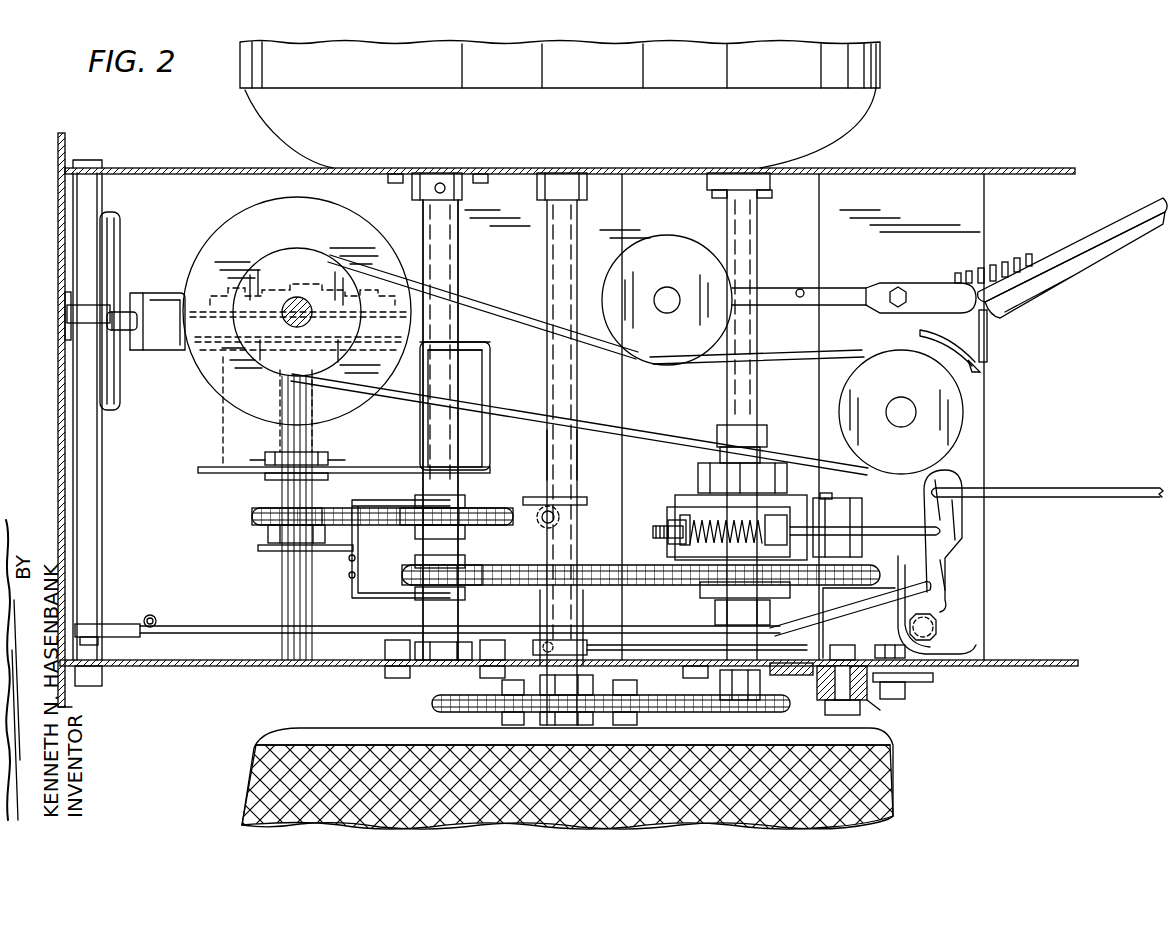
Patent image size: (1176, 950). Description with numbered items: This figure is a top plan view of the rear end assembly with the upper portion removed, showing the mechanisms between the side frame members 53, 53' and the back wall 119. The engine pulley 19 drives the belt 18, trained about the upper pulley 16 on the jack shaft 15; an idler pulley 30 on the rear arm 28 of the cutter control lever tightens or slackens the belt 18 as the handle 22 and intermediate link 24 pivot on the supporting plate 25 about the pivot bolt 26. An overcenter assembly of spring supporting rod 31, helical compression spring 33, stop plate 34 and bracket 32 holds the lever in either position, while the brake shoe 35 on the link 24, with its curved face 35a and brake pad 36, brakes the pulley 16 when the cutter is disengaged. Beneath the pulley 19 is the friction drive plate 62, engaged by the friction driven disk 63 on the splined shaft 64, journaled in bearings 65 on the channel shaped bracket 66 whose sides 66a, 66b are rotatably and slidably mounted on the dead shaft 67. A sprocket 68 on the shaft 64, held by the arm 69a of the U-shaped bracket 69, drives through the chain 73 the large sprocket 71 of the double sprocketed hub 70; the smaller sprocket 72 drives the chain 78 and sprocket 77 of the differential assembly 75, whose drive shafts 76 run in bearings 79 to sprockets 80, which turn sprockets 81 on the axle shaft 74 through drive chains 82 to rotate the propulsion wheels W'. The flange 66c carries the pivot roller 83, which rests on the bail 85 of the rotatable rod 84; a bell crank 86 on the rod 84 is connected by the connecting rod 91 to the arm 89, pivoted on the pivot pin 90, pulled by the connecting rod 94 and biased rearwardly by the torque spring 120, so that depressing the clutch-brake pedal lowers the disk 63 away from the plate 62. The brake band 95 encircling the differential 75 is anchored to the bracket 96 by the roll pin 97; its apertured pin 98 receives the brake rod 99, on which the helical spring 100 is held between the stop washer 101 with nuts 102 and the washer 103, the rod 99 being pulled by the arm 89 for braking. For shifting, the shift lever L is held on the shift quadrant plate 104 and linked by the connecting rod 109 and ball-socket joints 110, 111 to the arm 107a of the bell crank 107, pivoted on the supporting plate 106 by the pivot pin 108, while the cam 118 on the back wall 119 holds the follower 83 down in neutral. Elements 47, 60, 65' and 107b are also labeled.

The jack shaft 15 is at (893, 426).
The upper pulley 16 is at (908, 391).
The belt 18 is at (640, 432).
The engine pulley 19 is at (300, 275).
The handle portion 22 is at (1110, 240).
The intermediate link 24 is at (925, 283).
The supporting plate 25 is at (895, 207).
The pivot bolt 26 is at (908, 298).
The rear arm 28 is at (770, 310).
The idler pulley 30 is at (672, 277).
The spring supporting rod 31 is at (994, 265).
The bracket 32 is at (1080, 268).
The helical compression spring 33 is at (1027, 262).
The stop plate 34 is at (958, 273).
The brake shoe 35 is at (987, 326).
The concavely curved face 35a is at (978, 351).
The brake pad 36 is at (982, 373).
The pin 47 is at (797, 291).
The side frame member 53 is at (569, 680).
The side frame member 53' is at (570, 156).
The nut 60 is at (845, 714).
The friction drive plate 62 is at (290, 232).
The friction driven disk 63 is at (182, 335).
The splined shaft 64 is at (288, 320).
The bearings 65 is at (286, 444).
The clutch member 65' is at (300, 375).
The channel shaped bracket 66 is at (496, 382).
The bracket side 66a is at (385, 458).
The bracket side 66b is at (468, 350).
The flange 66c is at (150, 308).
The dead supporting shaft 67 is at (440, 253).
The sprocket 68 is at (262, 510).
The U-shaped bracket 69 is at (358, 598).
The rearwardly extending arm 69a is at (260, 550).
The double sprocketed hub 70 is at (460, 554).
The large sprocket 71 is at (410, 525).
The smaller sprocket 72 is at (405, 571).
The chain 73 is at (355, 510).
The axle shaft 74 is at (548, 454).
The differential assembly 75 is at (664, 502).
The drive shafts 76 is at (726, 388).
The sprocket 77 is at (680, 590).
The chain 78 is at (621, 566).
The bearings 79 is at (754, 184).
The sprockets 80 is at (760, 708).
The sprockets 81 is at (470, 712).
The drive chain 82 is at (645, 706).
The pivot roller 83 is at (137, 320).
The rotatable rod 84 is at (90, 468).
The bail 85 is at (120, 236).
The bell crank 86 is at (92, 632).
The arm 89 is at (936, 570).
The pivot pin 90 is at (938, 628).
The connecting rod 91 is at (238, 630).
The connecting rod 94 is at (1112, 486).
The brake band 95 is at (668, 531).
The bracket 96 is at (862, 506).
The roll pin 97 is at (826, 500).
The apertured pin 98 is at (764, 531).
The brake rod 99 is at (864, 530).
The helical spring 100 is at (730, 532).
The stop washer 101 is at (684, 526).
The nuts 102 is at (672, 541).
The washer 103 is at (765, 541).
The shift quadrant plate 104 is at (930, 680).
The supporting plate 106 is at (532, 283).
The bell crank 107 is at (528, 500).
The bell crank arm 107a is at (537, 609).
The nut 107b is at (518, 498).
The pivot pin 108 is at (540, 526).
The connecting rod 109 is at (672, 650).
The ball-socket joint assembly 110 is at (583, 645).
The ball-socket joint assembly 111 is at (785, 641).
The cam 118 is at (67, 318).
The back wall 119 is at (58, 412).
The torque spring 120 is at (955, 652).
The shift lever L is at (870, 706).
The propulsion wheels W' is at (599, 778).